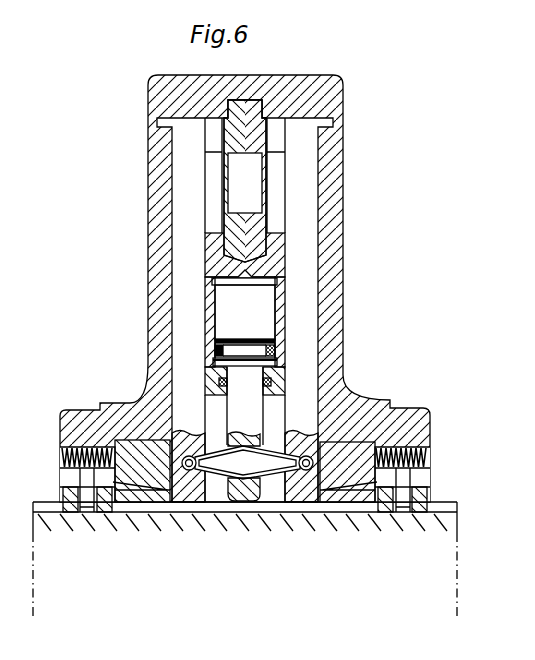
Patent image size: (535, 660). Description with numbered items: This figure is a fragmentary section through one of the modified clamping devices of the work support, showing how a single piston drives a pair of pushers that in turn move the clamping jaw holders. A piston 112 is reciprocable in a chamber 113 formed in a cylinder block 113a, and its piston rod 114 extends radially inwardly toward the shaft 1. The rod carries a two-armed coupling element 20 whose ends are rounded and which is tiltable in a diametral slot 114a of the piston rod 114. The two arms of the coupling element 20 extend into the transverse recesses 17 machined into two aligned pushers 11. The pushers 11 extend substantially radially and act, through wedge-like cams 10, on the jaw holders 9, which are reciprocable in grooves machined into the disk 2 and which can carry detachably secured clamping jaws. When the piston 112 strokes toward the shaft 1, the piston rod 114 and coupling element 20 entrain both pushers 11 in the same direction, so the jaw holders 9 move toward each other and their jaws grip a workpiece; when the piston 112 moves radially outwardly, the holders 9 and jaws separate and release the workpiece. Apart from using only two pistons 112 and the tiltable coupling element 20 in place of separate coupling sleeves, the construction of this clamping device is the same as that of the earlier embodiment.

The shaft 1 is at (443, 556).
The disk 2 is at (168, 226).
The jaw holder 9 is at (236, 114).
The wedge-like cam 10 is at (212, 178).
The pusher 11 is at (190, 272).
The transverse recess 17 is at (304, 437).
The two-armed coupling element 20 is at (267, 462).
The piston 112 is at (219, 352).
The chamber 113 is at (235, 300).
The cylinder block 113a is at (282, 323).
The piston rod 114 is at (247, 502).
The diametral slot 114a is at (228, 478).